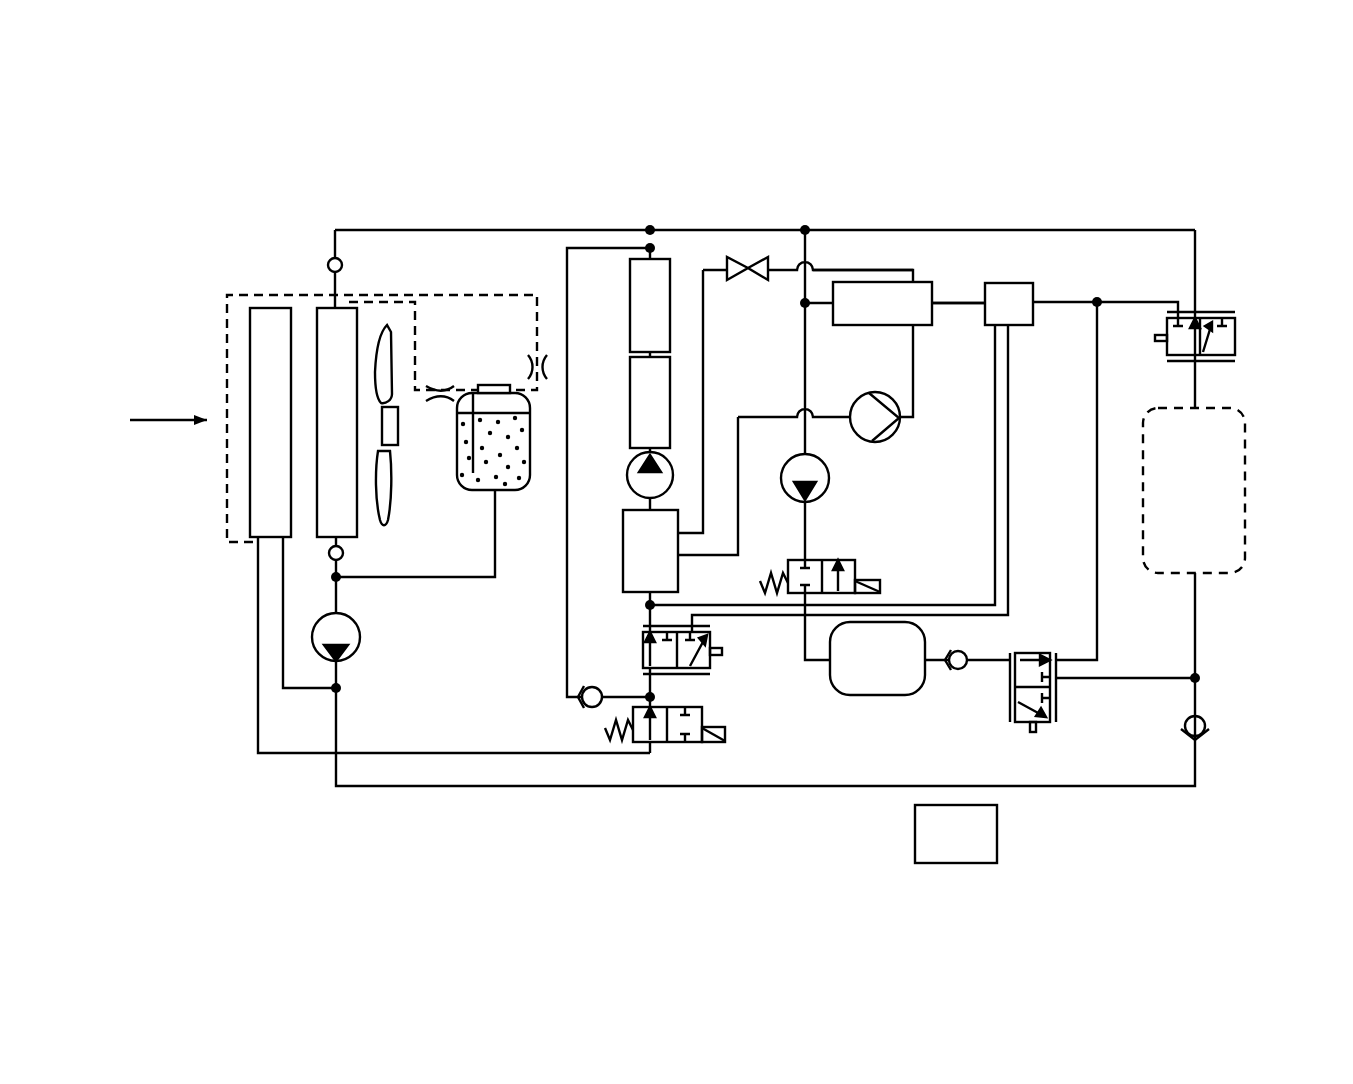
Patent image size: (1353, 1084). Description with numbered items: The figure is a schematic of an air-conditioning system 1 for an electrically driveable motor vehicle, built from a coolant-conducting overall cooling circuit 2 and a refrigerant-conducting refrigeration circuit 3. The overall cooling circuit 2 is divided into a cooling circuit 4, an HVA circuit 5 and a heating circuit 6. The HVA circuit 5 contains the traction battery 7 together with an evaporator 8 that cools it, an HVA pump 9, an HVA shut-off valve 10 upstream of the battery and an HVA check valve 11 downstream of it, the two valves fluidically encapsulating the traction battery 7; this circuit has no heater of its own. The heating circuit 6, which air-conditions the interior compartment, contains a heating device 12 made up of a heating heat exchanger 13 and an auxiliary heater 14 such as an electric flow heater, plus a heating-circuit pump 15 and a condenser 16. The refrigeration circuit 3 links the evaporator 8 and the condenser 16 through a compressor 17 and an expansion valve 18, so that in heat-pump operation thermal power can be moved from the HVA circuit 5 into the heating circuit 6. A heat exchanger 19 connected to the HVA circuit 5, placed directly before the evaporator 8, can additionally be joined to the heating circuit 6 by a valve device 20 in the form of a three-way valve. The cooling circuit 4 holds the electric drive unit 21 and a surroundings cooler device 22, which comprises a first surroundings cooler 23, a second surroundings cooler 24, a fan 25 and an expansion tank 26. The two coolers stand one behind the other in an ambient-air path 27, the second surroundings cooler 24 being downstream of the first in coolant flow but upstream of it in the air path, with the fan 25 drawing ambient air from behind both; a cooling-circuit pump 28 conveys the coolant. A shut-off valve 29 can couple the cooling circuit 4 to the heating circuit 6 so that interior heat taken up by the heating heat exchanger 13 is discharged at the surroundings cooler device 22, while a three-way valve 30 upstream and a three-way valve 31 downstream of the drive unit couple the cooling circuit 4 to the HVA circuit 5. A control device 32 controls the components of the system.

The air-conditioning system 1 is at (1090, 190).
The overall cooling circuit 2 is at (1135, 227).
The refrigeration circuit 3 is at (862, 270).
The cooling circuit 4 is at (1012, 230).
The HVA circuit 5 is at (955, 303).
The heating circuit 6 is at (600, 248).
The traction battery 7 is at (869, 676).
The evaporator 8 is at (873, 319).
The HVA pump 9 is at (830, 478).
The HVA shut-off valve 10 is at (850, 560).
The HVA check valve 11 is at (960, 670).
The heating device 12 is at (677, 373).
The heating heat exchanger 13 is at (630, 305).
The auxiliary heater 14 is at (630, 399).
The heating-circuit pump 15 is at (627, 478).
The condenser 16 is at (636, 566).
The compressor 17 is at (893, 435).
The expansion valve 18 is at (750, 257).
The heat exchanger 19 is at (1015, 283).
The valve device 20 is at (710, 660).
The electric drive unit 21 is at (1180, 506).
The surroundings cooler device 22 is at (280, 242).
The first surroundings cooler 23 is at (317, 530).
The second surroundings cooler 24 is at (250, 512).
The fan 25 is at (388, 325).
The expansion tank 26 is at (488, 385).
The ambient-air path 27 is at (160, 420).
The cooling-circuit pump 28 is at (361, 639).
The shut-off valve 29 is at (683, 742).
The three-way valve 30 is at (1057, 710).
The three-way valve 31 is at (1225, 315).
The control device 32 is at (941, 851).